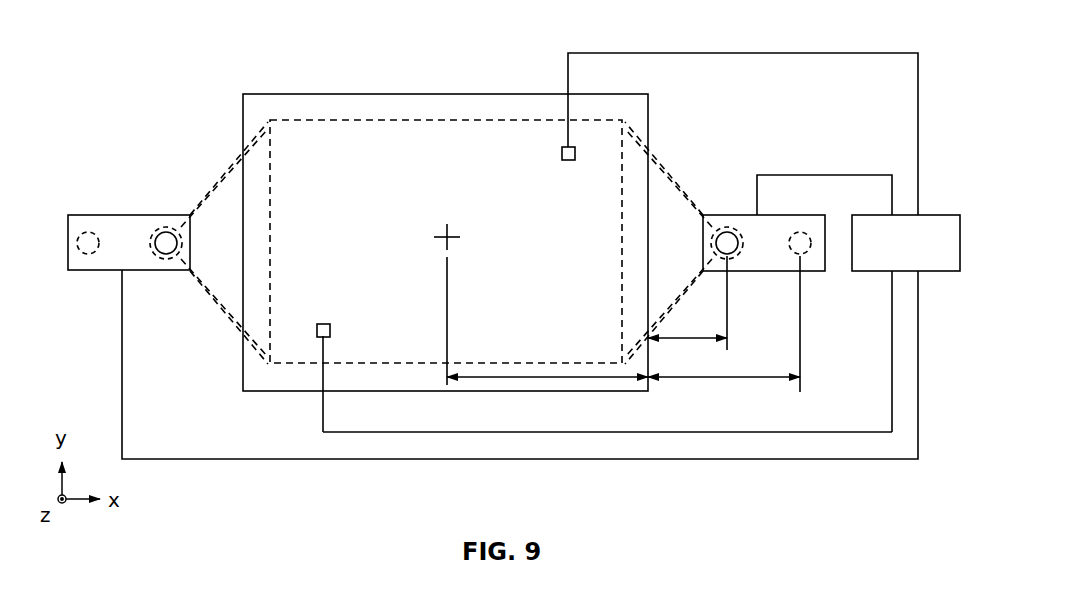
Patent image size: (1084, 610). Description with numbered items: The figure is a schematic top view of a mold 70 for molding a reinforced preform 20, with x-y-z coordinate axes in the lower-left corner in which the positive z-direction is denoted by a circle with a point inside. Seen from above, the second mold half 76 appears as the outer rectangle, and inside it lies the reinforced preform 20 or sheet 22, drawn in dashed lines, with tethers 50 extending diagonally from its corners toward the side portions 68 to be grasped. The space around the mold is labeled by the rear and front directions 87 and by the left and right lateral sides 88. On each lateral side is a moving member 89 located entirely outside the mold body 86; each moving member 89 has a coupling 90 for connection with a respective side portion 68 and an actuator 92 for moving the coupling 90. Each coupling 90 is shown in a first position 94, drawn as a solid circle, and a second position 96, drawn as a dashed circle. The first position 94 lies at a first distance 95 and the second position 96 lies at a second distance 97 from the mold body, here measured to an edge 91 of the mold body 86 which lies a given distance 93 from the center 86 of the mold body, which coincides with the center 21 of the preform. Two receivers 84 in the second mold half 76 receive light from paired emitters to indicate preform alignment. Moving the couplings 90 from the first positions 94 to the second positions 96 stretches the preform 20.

The mold 70 is at (146, 56).
The reinforced preform 20 is at (446, 206).
The sheet 22 is at (385, 118).
The tether 50 is at (224, 176).
The edge of the mold body 91 is at (651, 134).
The second mold half 76 is at (445, 242).
The coupling 90 is at (112, 190).
The second position 96 is at (88, 232).
The first position 94 is at (166, 232).
The actuator 92 is at (108, 258).
The side portion 68 is at (158, 272).
The lateral side 88 is at (541, 256).
The moving member 89 is at (104, 360).
The front and rear directions 87 is at (607, 242).
The receiver 84 is at (567, 162).
The center of the preform 21 is at (474, 273).
The mold body 86 is at (451, 232).
The given distance 93 is at (565, 376).
The first distance 95 is at (678, 337).
The second distance 97 is at (748, 376).